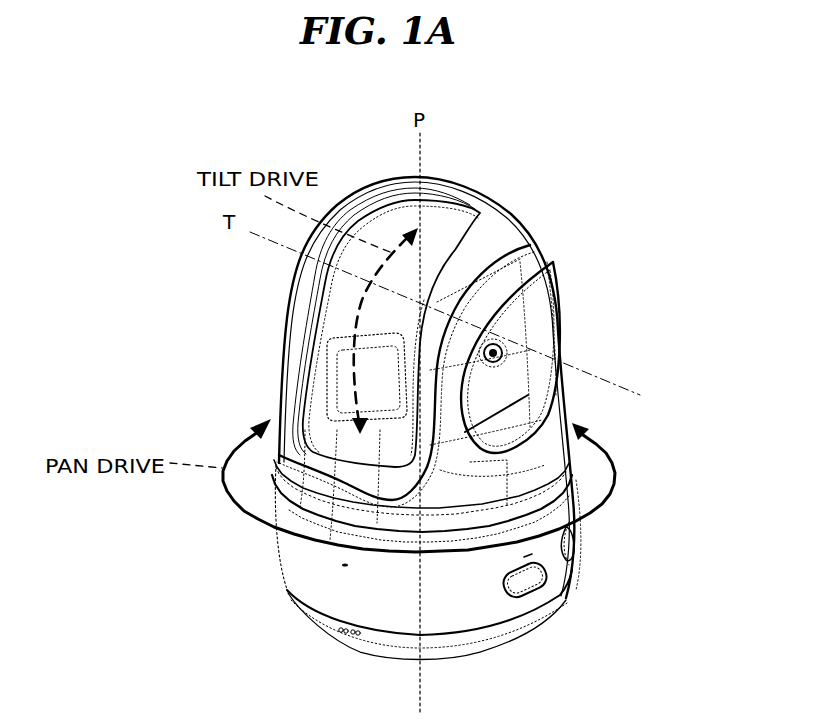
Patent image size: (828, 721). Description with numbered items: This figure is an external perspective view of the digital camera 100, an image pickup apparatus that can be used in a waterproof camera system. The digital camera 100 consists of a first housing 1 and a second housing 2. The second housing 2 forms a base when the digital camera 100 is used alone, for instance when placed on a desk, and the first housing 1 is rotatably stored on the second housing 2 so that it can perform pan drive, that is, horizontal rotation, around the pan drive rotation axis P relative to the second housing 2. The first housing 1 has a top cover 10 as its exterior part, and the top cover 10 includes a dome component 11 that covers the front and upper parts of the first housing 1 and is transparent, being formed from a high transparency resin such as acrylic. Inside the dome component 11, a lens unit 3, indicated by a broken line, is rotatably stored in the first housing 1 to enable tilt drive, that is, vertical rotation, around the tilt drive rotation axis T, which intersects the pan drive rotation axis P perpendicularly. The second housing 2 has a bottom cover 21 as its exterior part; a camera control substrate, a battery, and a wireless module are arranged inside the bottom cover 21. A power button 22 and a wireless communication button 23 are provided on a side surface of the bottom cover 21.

The digital camera 100 is at (582, 146).
The first housing 1 is at (630, 180).
The second housing 2 is at (630, 457).
The lens unit 3 is at (310, 371).
The top cover 10 is at (310, 268).
The dome component 11 is at (342, 310).
The bottom cover 21 is at (307, 583).
The power button 22 is at (523, 580).
The wireless communication button 23 is at (565, 545).